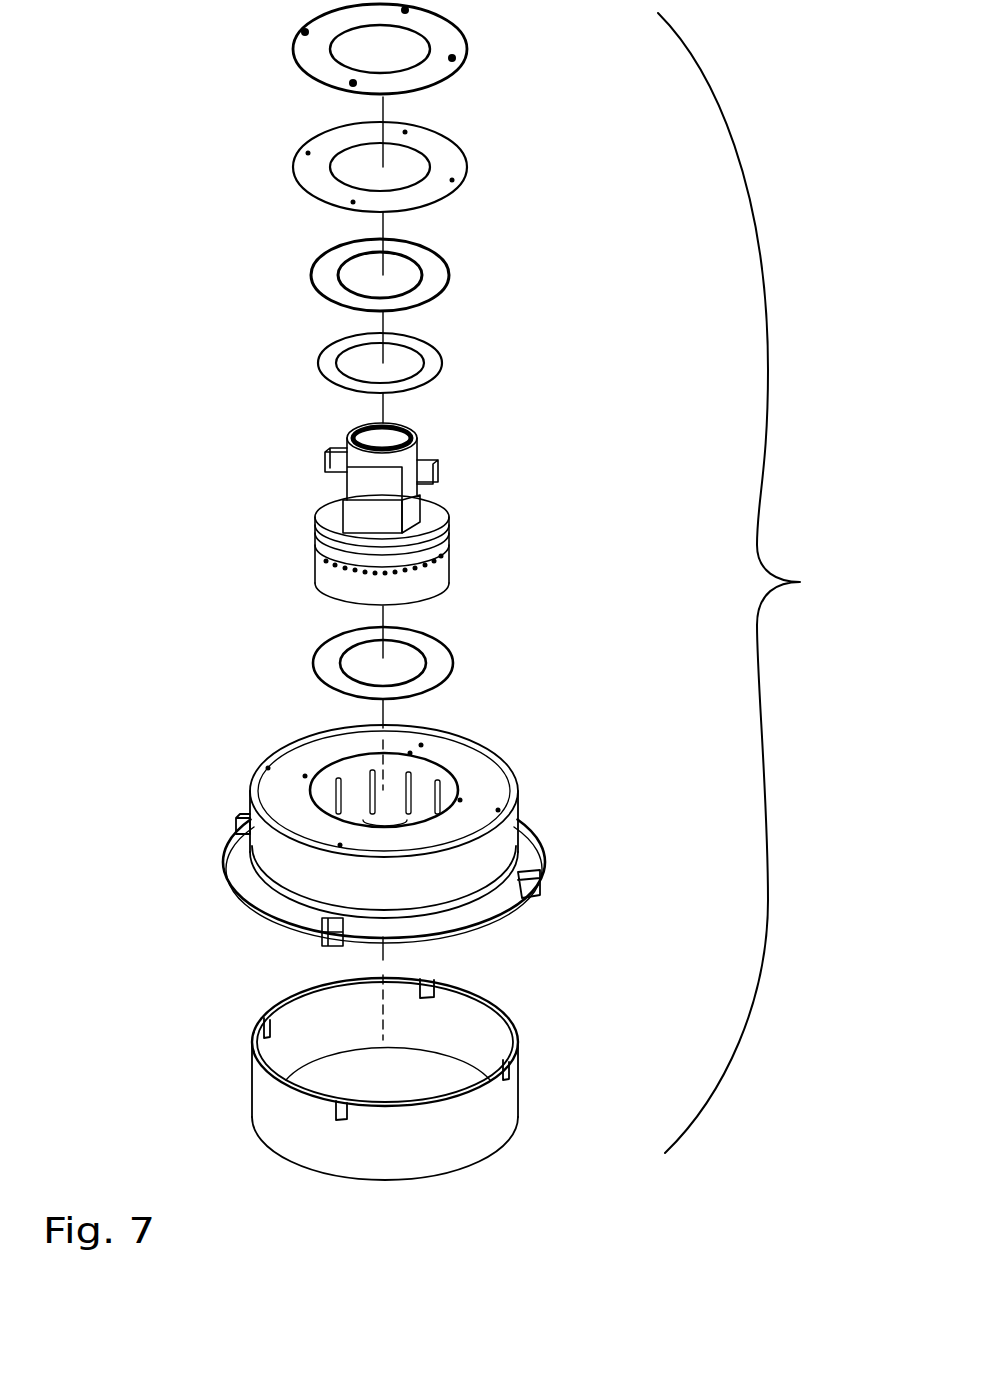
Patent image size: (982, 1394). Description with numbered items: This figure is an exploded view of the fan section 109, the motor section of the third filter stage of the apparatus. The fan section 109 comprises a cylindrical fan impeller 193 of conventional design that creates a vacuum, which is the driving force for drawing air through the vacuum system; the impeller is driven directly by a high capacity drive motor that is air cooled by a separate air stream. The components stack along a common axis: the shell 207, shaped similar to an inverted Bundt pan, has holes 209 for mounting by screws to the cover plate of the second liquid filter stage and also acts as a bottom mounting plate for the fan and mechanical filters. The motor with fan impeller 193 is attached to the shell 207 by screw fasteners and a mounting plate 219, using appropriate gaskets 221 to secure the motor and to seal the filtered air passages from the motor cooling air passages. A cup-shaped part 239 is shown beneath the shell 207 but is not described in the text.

The fan section 109 is at (800, 582).
The fan impeller 193 is at (445, 508).
The shell 207 is at (544, 850).
The holes 209 is at (320, 943).
The mounting plate 219 is at (467, 30).
The gaskets 221 is at (467, 148).
The bottom cup 239 is at (517, 1085).